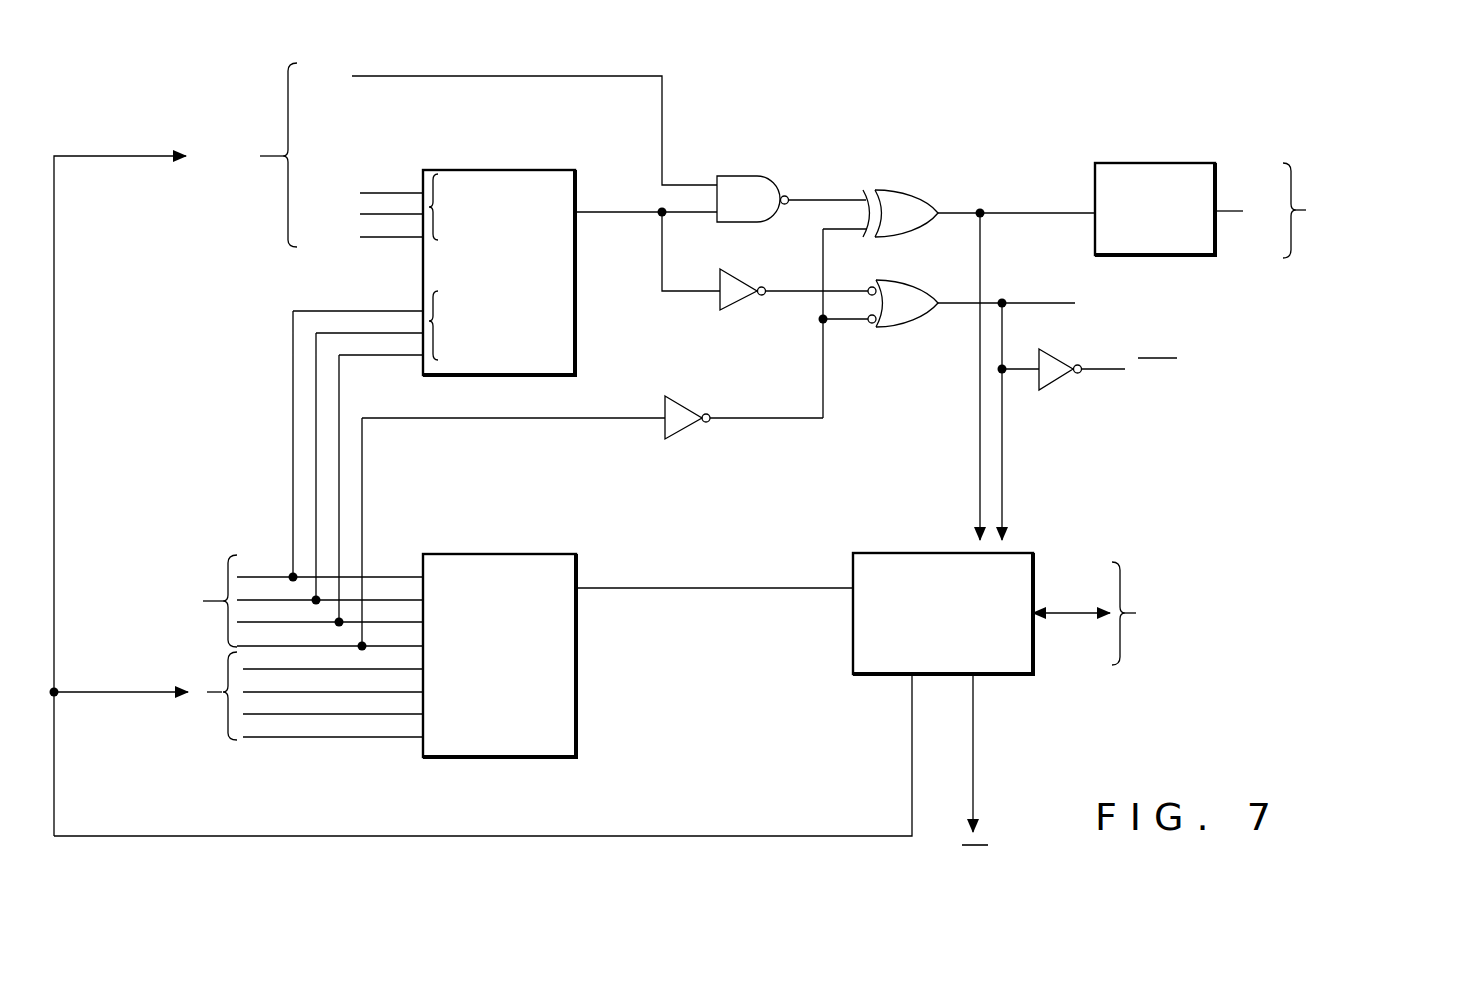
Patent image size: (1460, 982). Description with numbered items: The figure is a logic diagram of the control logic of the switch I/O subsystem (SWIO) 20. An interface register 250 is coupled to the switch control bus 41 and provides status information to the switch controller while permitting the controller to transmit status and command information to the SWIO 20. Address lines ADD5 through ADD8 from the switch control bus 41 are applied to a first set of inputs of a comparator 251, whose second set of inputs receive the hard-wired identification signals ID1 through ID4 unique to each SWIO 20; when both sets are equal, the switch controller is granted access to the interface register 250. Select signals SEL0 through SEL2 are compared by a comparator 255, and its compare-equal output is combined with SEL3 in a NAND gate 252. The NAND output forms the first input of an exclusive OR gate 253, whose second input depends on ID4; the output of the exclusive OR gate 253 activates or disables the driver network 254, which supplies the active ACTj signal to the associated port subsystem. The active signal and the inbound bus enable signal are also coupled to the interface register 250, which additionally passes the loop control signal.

The switch I/O subsystem 20 is at (736, 465).
The interface register 250 is at (904, 536).
The comparator 251 is at (535, 554).
The NAND gate 252 is at (745, 176).
The exclusive OR gate 253 is at (897, 188).
The driver network 254 is at (1165, 163).
The comparator 255 is at (576, 327).
The switch control bus 41 is at (1138, 614).